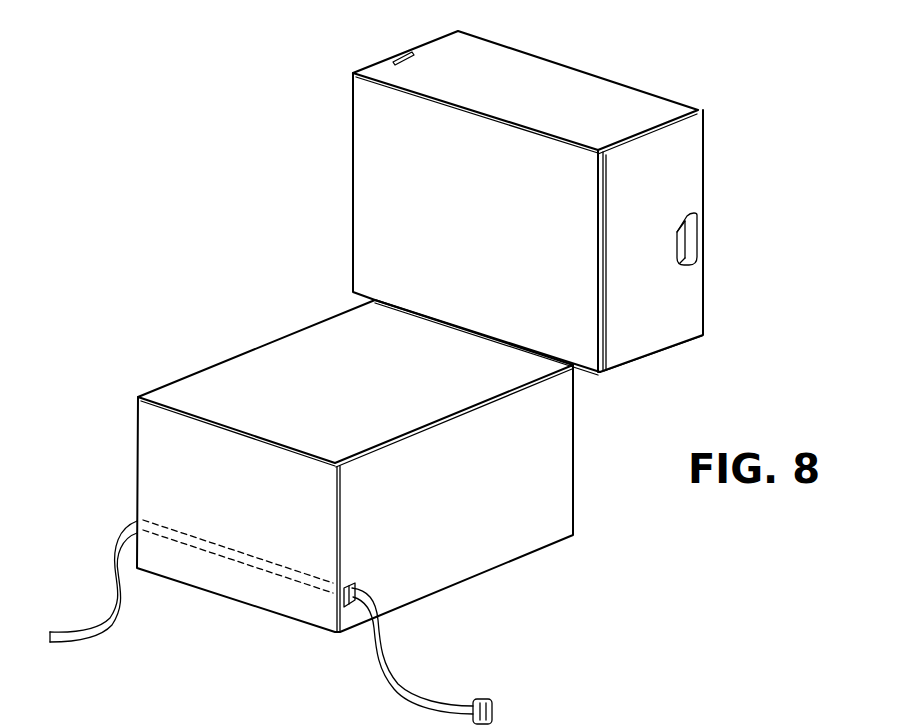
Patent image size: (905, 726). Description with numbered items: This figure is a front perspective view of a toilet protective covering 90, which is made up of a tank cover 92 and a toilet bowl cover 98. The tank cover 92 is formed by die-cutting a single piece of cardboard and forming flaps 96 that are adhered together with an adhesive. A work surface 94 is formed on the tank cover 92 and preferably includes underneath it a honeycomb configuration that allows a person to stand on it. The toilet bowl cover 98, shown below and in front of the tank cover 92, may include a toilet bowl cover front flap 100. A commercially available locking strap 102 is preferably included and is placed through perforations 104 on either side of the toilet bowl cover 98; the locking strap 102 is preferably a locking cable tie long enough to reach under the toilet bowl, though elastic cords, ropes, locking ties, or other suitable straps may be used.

The toilet protective covering 90 is at (508, 204).
The tank cover 92 is at (364, 205).
The work surface 94 is at (540, 98).
The flaps 96 is at (387, 62).
The toilet bowl cover 98 is at (234, 371).
The toilet bowl cover front flap 100 is at (311, 512).
The locking strap 102 is at (435, 703).
The perforations 104 is at (358, 588).